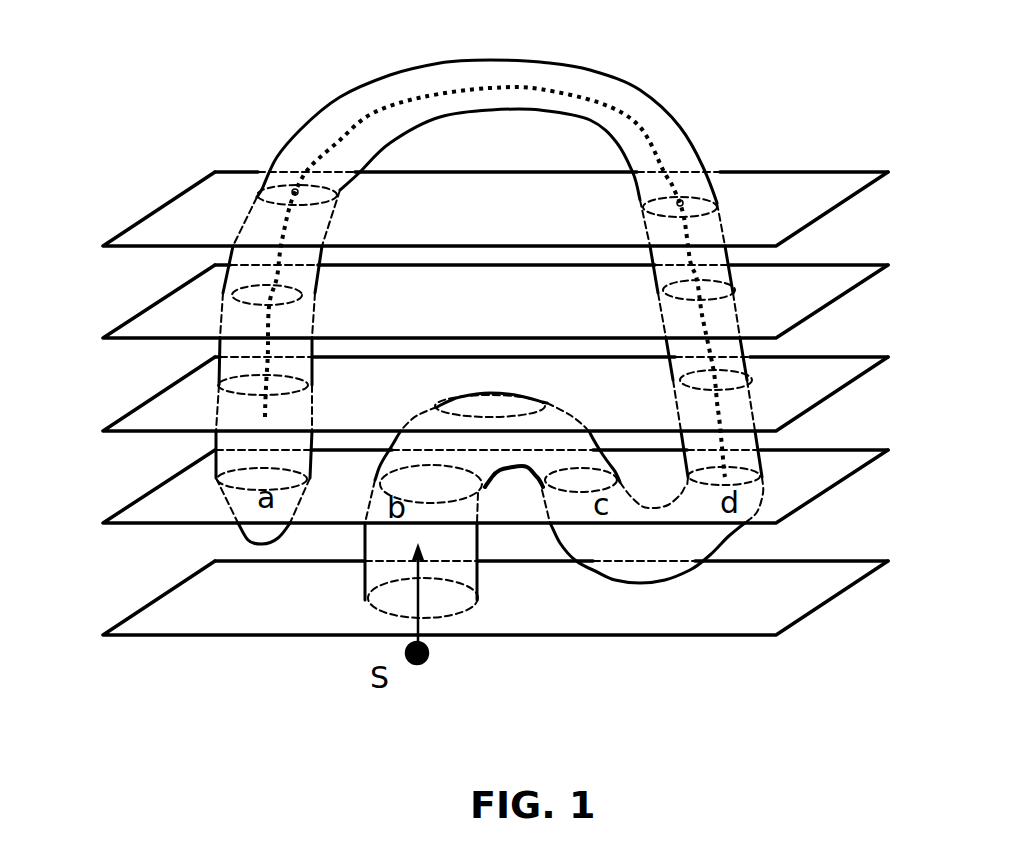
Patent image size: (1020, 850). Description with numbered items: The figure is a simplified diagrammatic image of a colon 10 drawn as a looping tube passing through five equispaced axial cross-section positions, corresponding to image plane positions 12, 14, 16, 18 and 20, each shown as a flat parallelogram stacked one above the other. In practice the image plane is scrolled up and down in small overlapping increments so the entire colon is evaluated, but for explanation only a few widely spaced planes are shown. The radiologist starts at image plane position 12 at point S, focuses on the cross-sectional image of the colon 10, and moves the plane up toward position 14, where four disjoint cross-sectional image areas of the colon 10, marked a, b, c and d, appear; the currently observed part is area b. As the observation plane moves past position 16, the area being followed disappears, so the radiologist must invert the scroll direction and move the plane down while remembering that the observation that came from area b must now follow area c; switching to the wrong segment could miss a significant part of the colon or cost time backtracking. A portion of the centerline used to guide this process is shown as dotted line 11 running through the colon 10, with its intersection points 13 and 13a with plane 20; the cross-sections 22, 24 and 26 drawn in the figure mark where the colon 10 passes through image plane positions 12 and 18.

The colon 10 is at (172, 130).
The centerline 11 is at (610, 107).
The intersection point 13 is at (292, 190).
The intersection point 13a is at (685, 202).
The image plane position 20 is at (155, 227).
The image plane position 18 is at (163, 313).
The image plane position 16 is at (155, 407).
The image plane position 14 is at (155, 505).
The image plane position 12 is at (200, 607).
The source via opening 22 is at (383, 600).
The first via cross-section in layer 18 24 is at (300, 293).
The second via cross-section in layer 18 26 is at (700, 298).